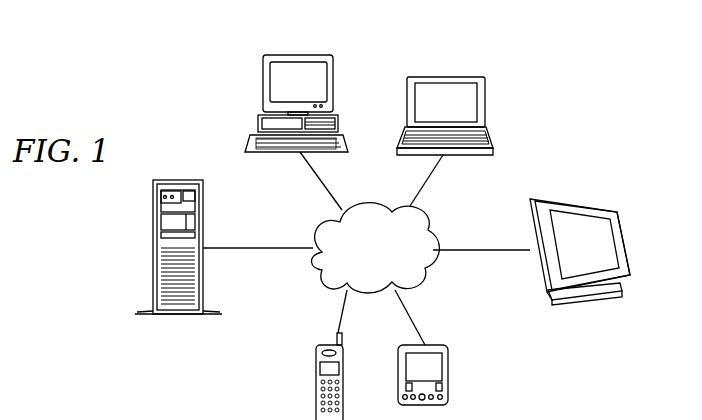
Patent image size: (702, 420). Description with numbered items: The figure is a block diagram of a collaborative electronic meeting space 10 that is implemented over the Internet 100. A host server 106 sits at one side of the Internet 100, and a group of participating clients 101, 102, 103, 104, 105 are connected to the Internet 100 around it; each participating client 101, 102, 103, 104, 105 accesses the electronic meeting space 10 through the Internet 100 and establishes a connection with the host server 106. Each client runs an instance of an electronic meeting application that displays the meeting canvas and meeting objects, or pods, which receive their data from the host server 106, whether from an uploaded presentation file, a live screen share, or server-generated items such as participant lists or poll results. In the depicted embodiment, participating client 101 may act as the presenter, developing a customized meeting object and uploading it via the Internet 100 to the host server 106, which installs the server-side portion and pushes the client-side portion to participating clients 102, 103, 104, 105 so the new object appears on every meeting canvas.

The collaborative electronic meeting space 10 is at (575, 145).
The Internet 100 is at (316, 266).
The participating client 101 is at (258, 121).
The participating client 102 is at (488, 100).
The participating client 103 is at (601, 306).
The participating client 104 is at (449, 378).
The participating client 105 is at (315, 384).
The host server 106 is at (181, 179).